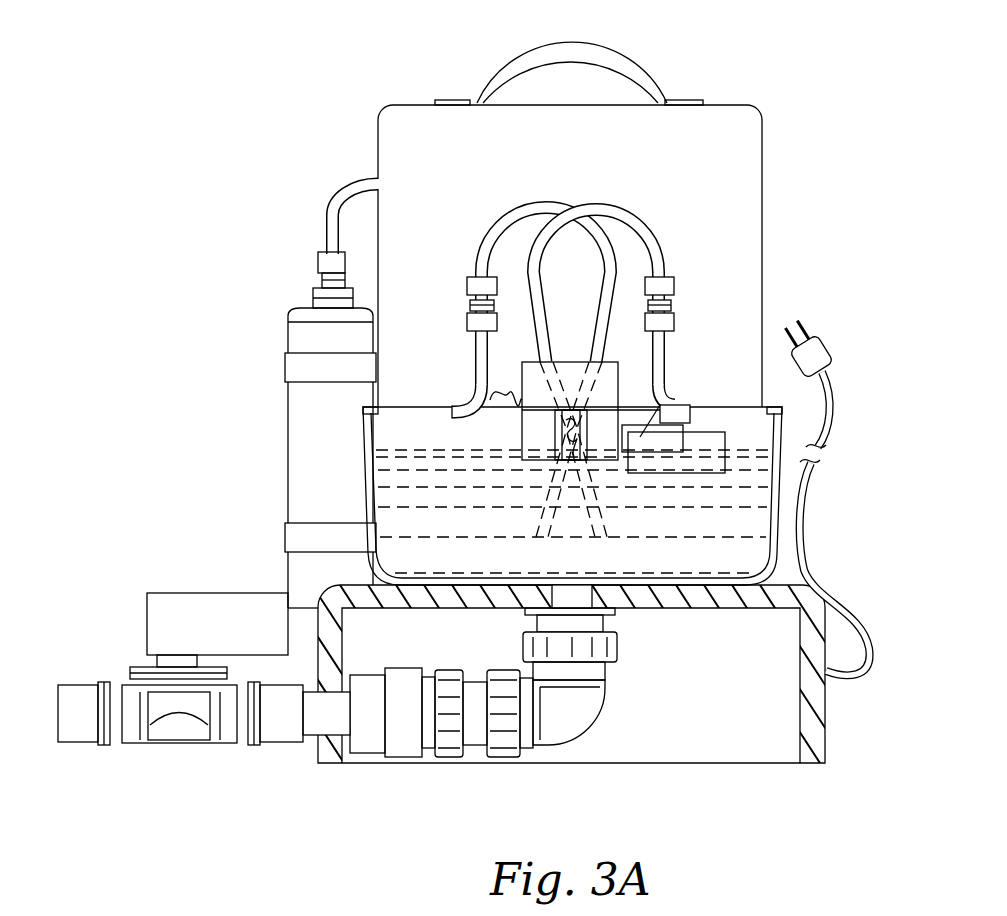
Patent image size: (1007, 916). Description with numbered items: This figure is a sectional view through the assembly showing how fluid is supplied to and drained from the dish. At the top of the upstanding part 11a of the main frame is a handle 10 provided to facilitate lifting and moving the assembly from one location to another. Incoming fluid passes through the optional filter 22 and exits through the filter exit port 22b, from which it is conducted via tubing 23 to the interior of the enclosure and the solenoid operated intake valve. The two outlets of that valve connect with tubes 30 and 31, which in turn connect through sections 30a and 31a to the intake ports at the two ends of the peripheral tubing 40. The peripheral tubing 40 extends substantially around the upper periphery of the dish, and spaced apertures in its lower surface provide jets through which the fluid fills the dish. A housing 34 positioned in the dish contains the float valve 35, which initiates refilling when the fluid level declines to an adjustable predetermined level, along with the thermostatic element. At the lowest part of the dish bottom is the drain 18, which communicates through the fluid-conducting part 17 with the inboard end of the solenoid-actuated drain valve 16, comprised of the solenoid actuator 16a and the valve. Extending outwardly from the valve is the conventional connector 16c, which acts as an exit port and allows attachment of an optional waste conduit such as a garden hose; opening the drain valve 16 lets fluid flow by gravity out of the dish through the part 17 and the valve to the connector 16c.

The handle 10 is at (652, 62).
The upstanding part of main frame 11a is at (593, 160).
The solenoid-actuated drain valve 16 is at (96, 648).
The solenoid actuator 16a is at (236, 600).
The connector 16c is at (78, 697).
The fluid-conducting part 17 is at (312, 742).
The drain 18 is at (566, 592).
The filter 22 is at (342, 457).
The filter exit port 22b is at (313, 300).
The tubing 23 is at (327, 210).
The tube 30 is at (475, 255).
The section 30a is at (475, 350).
The tube 31 is at (665, 255).
The section 31a is at (665, 365).
The housing 34 is at (528, 405).
The float valve 35 is at (625, 388).
The peripheral tubing 40 is at (401, 407).